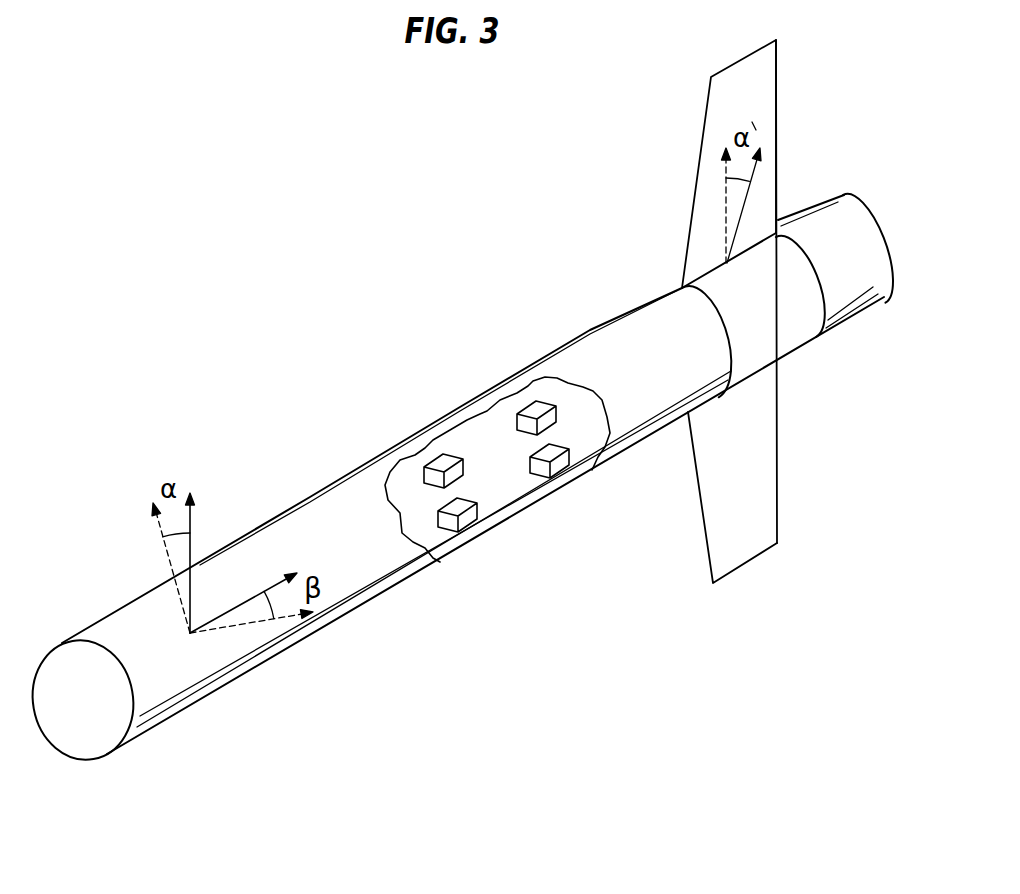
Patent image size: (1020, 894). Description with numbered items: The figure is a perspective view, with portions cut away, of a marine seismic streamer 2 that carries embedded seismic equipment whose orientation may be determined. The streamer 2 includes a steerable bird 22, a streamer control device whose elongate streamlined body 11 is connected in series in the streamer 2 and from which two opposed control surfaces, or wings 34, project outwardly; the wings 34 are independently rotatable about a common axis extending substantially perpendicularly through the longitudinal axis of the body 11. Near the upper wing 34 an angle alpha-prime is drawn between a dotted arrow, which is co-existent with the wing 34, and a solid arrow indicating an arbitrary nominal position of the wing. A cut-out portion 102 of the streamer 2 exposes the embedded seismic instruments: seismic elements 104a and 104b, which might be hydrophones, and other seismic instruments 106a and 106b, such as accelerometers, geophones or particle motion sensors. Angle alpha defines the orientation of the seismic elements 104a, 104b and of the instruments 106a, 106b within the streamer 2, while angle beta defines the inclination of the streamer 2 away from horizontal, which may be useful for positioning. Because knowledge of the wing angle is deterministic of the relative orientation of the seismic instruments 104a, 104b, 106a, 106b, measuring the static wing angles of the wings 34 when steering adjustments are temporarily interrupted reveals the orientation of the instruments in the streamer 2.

The marine seismic streamer 2 is at (107, 627).
The elongate streamlined body 11 is at (787, 327).
The steerable bird 22 is at (713, 311).
The wings 34 is at (707, 127).
The cut-out portion 102 is at (385, 497).
The seismic element 104a is at (445, 460).
The seismic element 104b is at (468, 513).
The seismic instrument 106a is at (530, 400).
The seismic instrument 106b is at (558, 458).